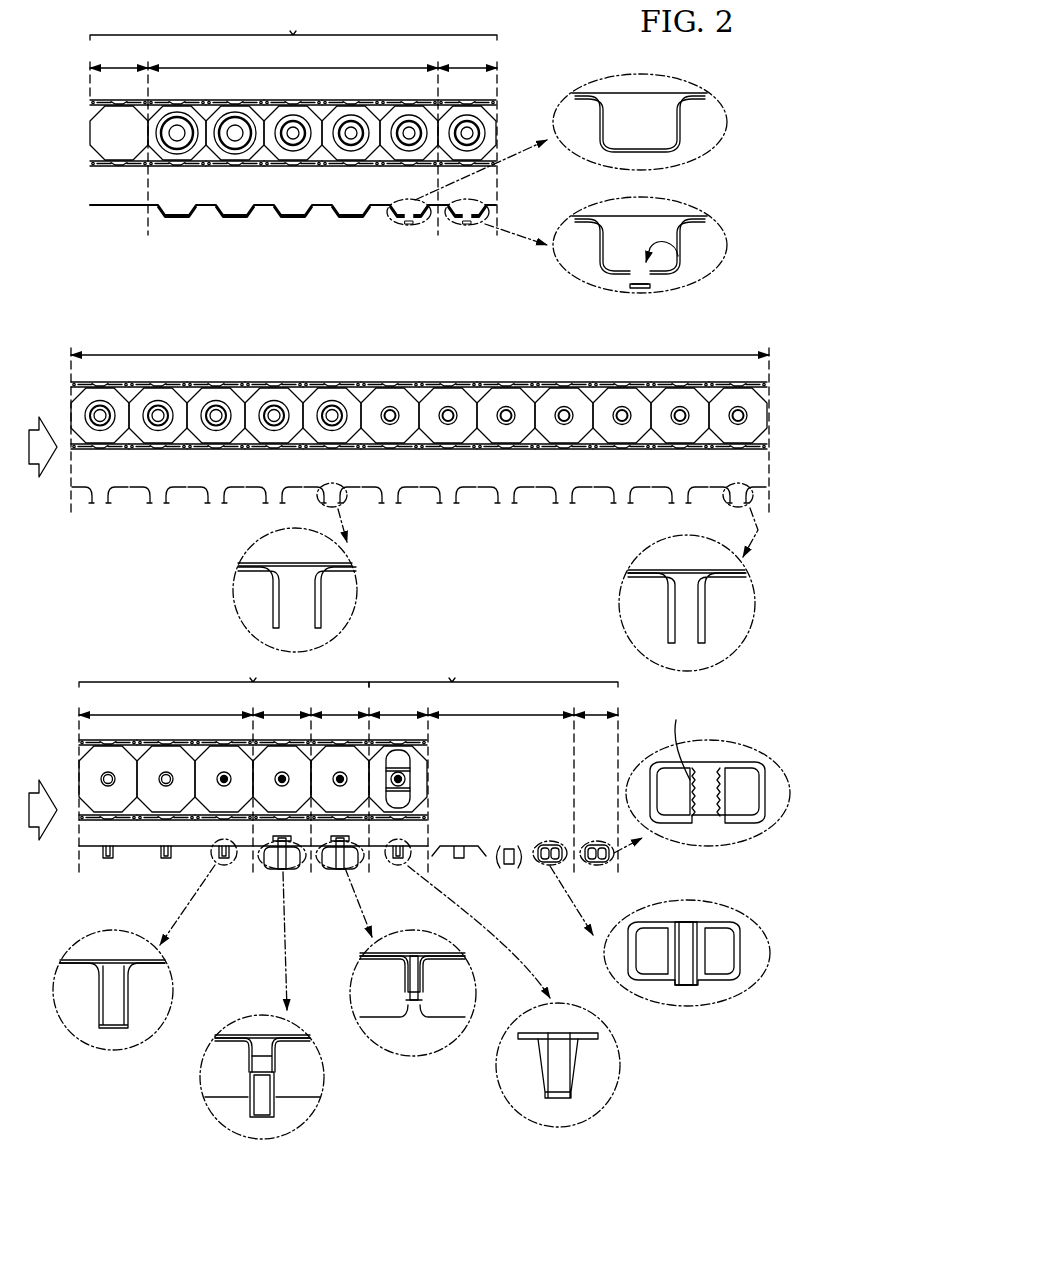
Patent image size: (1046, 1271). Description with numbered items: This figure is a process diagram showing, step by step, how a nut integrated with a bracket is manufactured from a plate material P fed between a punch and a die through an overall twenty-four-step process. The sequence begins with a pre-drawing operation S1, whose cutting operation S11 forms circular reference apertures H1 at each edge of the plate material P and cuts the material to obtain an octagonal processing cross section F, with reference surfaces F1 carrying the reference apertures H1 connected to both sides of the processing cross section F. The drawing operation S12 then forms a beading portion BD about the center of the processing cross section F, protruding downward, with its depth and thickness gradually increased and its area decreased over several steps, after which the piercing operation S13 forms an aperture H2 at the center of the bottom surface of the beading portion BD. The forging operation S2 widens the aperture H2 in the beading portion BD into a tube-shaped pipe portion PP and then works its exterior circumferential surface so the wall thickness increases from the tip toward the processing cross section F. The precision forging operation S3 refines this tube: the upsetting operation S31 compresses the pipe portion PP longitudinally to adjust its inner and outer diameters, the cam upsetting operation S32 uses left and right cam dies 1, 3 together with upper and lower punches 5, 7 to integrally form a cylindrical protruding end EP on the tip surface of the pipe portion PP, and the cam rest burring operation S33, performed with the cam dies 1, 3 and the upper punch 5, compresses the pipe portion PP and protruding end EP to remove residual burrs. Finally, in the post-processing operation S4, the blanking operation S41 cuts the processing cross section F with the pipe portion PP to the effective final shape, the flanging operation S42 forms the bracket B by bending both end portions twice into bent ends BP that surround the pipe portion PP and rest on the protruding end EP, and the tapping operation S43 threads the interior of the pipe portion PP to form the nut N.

The pre-drawing operation S1 is at (293, 22).
The cutting operation S11 is at (119, 136).
The drawing operation S12 is at (293, 136).
The piercing operation S13 is at (467, 136).
The forging operation S2 is at (420, 419).
The precision forging operation S3 is at (224, 669).
The upsetting operation S31 is at (166, 779).
The cam upsetting operation S32 is at (282, 779).
The cam rest burring operation S33 is at (340, 779).
The post-processing operation S4 is at (493, 669).
The blanking operation S41 is at (398, 779).
The flanging operation S42 is at (501, 779).
The tapping operation S43 is at (596, 779).
The processing cross section F is at (100, 147).
The reference surfaces F1 is at (100, 98).
The reference apertures H1 is at (96, 101).
The aperture H2 is at (680, 262).
The plate material P is at (84, 122).
The beading portion BD is at (694, 128).
The pipe portion PP is at (330, 598).
The nut N is at (676, 740).
The bracket B is at (735, 762).
The bent ends BP is at (680, 825).
The protruding end EP is at (725, 825).
The left cam die 1 is at (218, 1082).
The right cam die 3 is at (308, 1072).
The upper punch 5 is at (262, 1032).
The lower punch 7 is at (268, 1117).